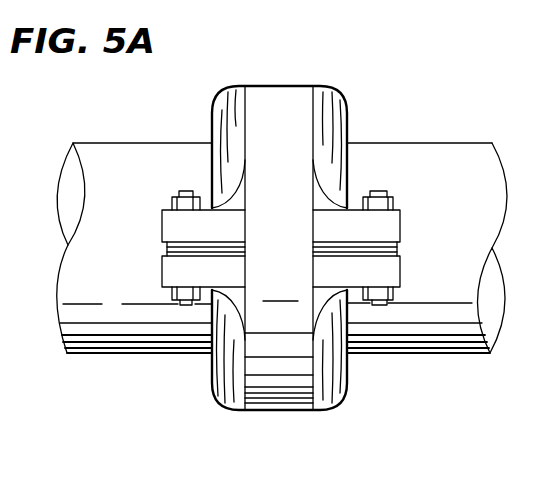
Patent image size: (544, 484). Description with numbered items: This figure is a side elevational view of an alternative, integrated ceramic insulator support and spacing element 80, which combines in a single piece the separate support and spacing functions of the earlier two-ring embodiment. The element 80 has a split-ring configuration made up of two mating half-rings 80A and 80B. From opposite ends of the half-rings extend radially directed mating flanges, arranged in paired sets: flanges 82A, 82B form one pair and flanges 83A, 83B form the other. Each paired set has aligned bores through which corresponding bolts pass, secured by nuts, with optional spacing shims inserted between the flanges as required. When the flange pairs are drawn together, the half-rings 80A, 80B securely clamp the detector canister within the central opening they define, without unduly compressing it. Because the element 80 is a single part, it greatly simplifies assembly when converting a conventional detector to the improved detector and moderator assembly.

The integrated ceramic insulator support and spacing element 80 is at (282, 85).
The half-ring 80A is at (346, 115).
The half-ring 80B is at (345, 375).
The mating flange 82A is at (400, 265).
The mating flange 82B is at (162, 272).
The mating flange 83A is at (400, 218).
The mating flange 83B is at (162, 221).